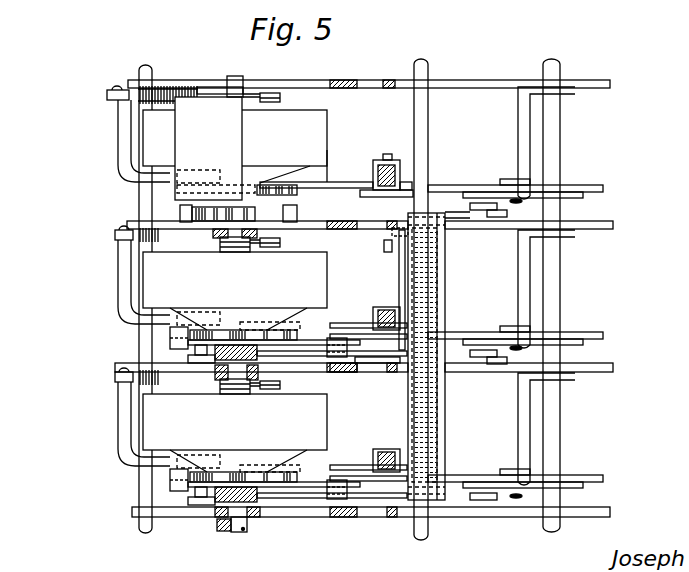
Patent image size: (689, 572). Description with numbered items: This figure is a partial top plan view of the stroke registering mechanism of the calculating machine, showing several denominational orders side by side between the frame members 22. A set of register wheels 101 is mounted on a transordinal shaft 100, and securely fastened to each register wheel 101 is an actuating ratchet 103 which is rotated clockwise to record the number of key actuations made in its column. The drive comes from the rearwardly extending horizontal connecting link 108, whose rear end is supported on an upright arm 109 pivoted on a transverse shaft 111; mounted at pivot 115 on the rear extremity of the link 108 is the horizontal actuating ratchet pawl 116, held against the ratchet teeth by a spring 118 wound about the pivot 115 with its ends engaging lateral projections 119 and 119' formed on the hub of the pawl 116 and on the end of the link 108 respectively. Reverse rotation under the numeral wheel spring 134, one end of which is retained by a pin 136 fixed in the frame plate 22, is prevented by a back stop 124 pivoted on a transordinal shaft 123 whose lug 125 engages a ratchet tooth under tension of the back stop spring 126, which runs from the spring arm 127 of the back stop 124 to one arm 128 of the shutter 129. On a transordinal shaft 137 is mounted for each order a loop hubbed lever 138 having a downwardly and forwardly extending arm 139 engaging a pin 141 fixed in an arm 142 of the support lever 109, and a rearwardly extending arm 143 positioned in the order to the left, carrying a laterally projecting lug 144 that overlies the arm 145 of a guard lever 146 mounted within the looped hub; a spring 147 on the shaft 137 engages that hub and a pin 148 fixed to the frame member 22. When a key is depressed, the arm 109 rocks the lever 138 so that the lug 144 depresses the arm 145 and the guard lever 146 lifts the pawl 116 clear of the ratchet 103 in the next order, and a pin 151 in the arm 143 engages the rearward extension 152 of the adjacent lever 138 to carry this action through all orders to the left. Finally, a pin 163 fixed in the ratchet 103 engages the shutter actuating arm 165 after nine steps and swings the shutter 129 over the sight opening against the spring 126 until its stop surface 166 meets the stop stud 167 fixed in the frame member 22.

The frame member 22 is at (163, 226).
The transordinal shaft 100 is at (238, 531).
The register wheel 101 is at (150, 158).
The actuating ratchet 103 is at (212, 478).
The connecting link 108 is at (598, 186).
The upright arm 109 is at (572, 200).
The transverse shaft 111 is at (553, 116).
The pivot 115 is at (385, 158).
The actuating ratchet pawl 116 is at (325, 185).
The spring 118 is at (392, 165).
The lateral projection 119 is at (316, 172).
The lateral projection 119' is at (430, 171).
The transordinal shaft 123 is at (143, 520).
The back stop 124 is at (117, 124).
The lateral projection or lug 125 is at (170, 488).
The back stop spring 126 is at (163, 86).
The spring arm 127 is at (113, 94).
The shutter arm 128 is at (205, 88).
The shutter 129 is at (232, 108).
The numeral wheel spring 134 is at (225, 245).
The pin 136 is at (281, 98).
The transordinal shaft 137 is at (421, 104).
The loop hubbed lever 138 is at (443, 288).
The downwardly and forwardly extending arm 139 is at (463, 233).
The pin 141 is at (475, 210).
The arm 142 is at (485, 203).
The rearwardly extending arm 143 is at (372, 365).
The laterally projecting lug 144 is at (330, 338).
The rearwardly extending arm 145 is at (345, 330).
The guard lever 146 is at (402, 272).
The spring 147 is at (390, 250).
The pin 148 is at (395, 234).
The pin 151 is at (355, 372).
The rearward extension 152 is at (350, 222).
The pin 163 is at (195, 492).
The shutter actuating arm 165 is at (222, 508).
The stop surface 166 is at (215, 198).
The stop stud 167 is at (175, 208).